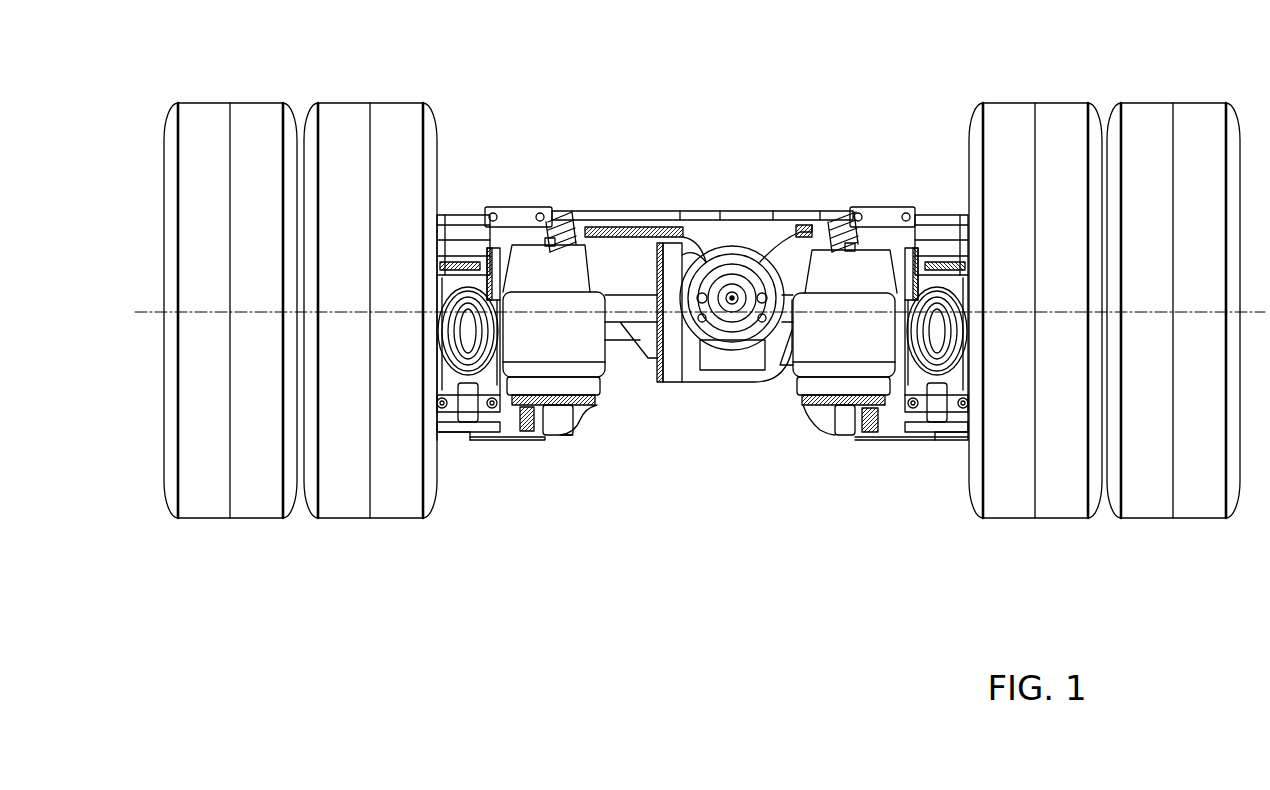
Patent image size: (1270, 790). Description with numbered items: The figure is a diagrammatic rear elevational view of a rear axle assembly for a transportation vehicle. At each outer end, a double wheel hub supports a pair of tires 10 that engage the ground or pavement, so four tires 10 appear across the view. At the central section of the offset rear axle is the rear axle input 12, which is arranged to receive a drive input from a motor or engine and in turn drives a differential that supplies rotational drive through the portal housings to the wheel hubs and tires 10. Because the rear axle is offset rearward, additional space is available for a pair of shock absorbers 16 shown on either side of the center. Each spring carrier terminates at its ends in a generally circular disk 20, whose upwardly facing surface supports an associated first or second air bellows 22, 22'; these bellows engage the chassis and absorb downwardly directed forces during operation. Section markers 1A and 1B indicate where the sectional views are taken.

The tires 10 is at (199, 120).
The rear axle input 12 is at (760, 283).
The shock absorbers 16 is at (558, 263).
The circular disk 20 is at (590, 408).
The first air bellows 22 is at (700, 393).
The second air bellows 22' is at (700, 213).
The section line 1A is at (135, 305).
The section line 1B is at (467, 485).